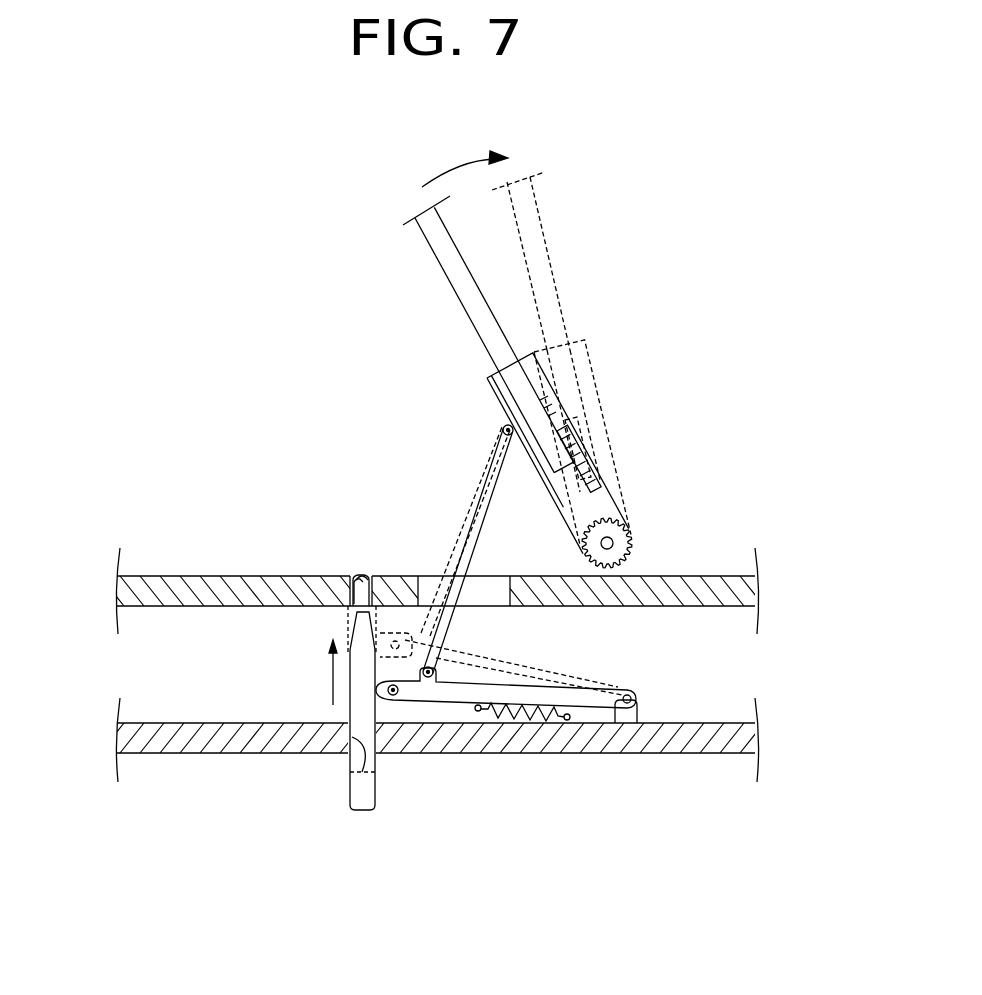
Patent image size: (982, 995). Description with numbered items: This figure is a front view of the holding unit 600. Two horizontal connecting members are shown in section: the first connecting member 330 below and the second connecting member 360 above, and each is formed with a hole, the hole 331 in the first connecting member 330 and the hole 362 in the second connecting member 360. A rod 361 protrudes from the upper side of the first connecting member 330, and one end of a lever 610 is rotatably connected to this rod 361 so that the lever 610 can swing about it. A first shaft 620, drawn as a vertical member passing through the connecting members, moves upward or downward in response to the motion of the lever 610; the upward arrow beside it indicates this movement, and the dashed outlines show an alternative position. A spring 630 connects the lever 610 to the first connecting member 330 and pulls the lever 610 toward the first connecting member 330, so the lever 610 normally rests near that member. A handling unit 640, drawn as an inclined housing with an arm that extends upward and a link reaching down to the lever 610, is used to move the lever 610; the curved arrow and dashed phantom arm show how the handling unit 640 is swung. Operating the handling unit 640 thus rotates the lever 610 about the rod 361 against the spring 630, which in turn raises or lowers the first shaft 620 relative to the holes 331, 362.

The holding unit 600 is at (252, 362).
The second connecting member 360 is at (213, 568).
The first connecting member 330 is at (213, 762).
The hole 331 is at (350, 773).
The rod 361 is at (626, 712).
The hole 362 is at (360, 574).
The lever 610 is at (458, 697).
The first shaft 620 is at (364, 800).
The spring 630 is at (530, 713).
The handling unit 640 is at (476, 391).